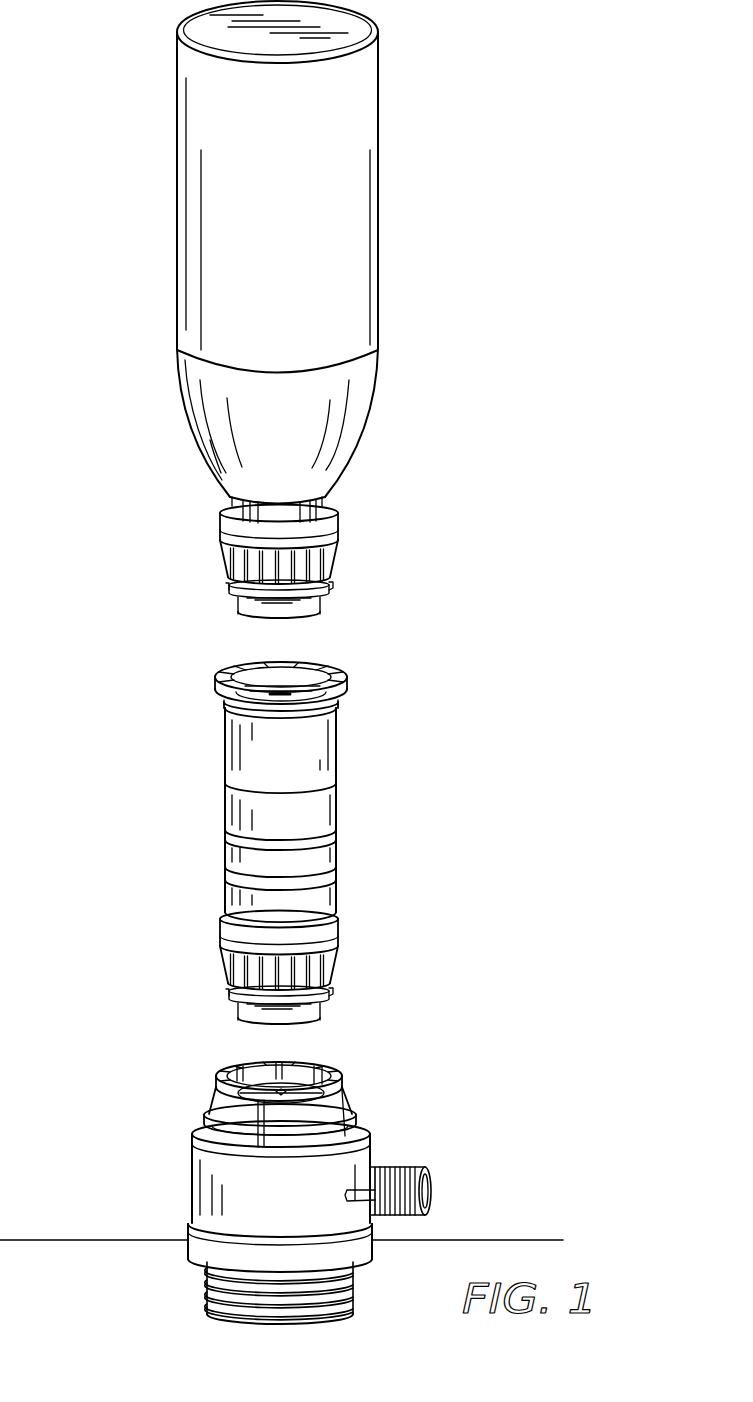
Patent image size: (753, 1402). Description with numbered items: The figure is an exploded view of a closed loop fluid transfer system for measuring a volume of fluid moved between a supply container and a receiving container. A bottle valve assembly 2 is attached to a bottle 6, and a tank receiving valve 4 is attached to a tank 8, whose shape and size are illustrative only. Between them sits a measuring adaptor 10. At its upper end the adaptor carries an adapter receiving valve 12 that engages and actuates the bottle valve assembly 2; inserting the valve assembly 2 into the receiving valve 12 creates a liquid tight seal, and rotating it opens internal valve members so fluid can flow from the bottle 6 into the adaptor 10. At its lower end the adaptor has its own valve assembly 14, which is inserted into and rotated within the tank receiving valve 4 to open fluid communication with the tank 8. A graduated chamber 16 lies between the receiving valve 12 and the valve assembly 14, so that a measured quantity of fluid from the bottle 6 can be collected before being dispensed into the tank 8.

The bottle 6 is at (418, 183).
The bottle valve assembly 2 is at (233, 534).
The measuring adaptor 10 is at (436, 791).
The adapter receiving valve 12 is at (340, 664).
The graduated chamber 16 is at (236, 813).
The valve assembly 14 is at (340, 954).
The tank receiving valve 4 is at (166, 1173).
The tank 8 is at (449, 1265).